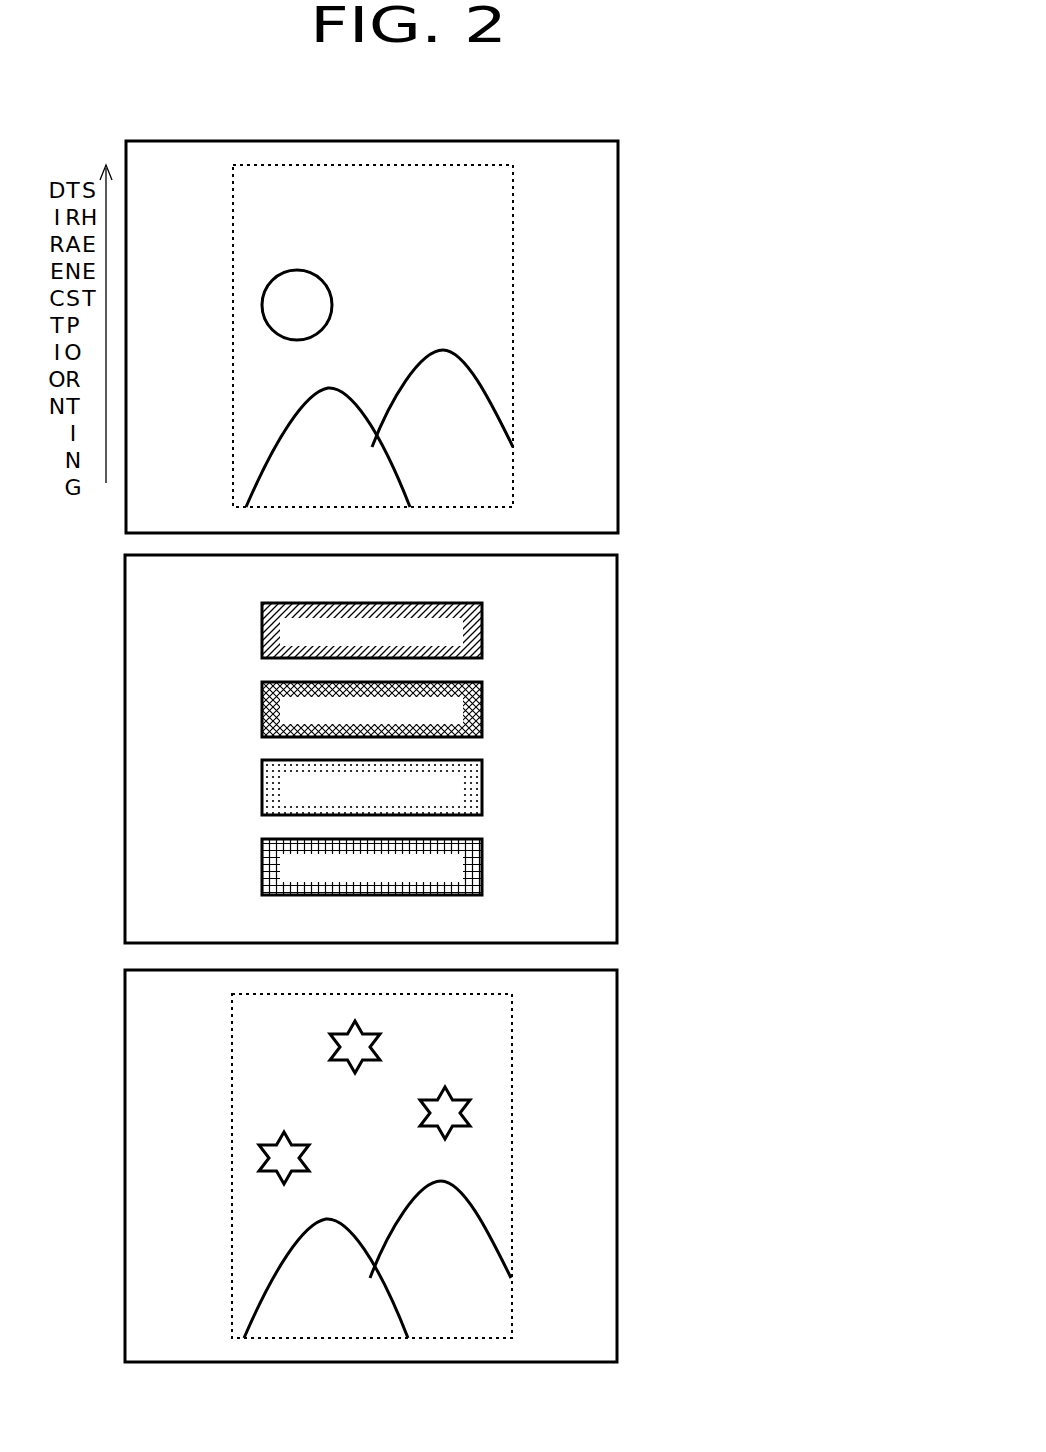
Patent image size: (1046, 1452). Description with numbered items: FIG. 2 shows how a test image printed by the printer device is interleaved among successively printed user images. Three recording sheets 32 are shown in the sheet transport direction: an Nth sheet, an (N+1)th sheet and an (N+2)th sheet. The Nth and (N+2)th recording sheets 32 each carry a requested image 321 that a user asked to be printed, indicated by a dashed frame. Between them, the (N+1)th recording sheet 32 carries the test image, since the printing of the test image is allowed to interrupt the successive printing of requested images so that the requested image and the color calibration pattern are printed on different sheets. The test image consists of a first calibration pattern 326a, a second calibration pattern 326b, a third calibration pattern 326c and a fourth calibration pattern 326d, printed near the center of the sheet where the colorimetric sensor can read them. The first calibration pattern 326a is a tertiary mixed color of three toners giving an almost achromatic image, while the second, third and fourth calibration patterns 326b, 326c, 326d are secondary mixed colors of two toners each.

The recording sheet 32 is at (399, 141).
The requested image 321 is at (513, 352).
The first calibration pattern 326a is at (262, 628).
The second calibration pattern 326b is at (262, 707).
The third calibration pattern 326c is at (262, 786).
The fourth calibration pattern 326d is at (262, 865).